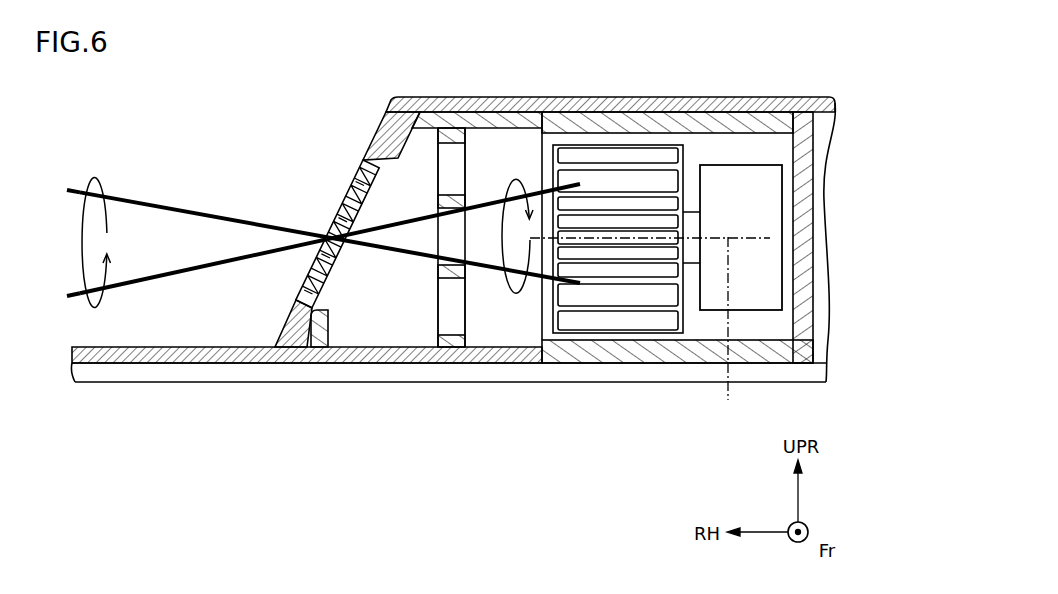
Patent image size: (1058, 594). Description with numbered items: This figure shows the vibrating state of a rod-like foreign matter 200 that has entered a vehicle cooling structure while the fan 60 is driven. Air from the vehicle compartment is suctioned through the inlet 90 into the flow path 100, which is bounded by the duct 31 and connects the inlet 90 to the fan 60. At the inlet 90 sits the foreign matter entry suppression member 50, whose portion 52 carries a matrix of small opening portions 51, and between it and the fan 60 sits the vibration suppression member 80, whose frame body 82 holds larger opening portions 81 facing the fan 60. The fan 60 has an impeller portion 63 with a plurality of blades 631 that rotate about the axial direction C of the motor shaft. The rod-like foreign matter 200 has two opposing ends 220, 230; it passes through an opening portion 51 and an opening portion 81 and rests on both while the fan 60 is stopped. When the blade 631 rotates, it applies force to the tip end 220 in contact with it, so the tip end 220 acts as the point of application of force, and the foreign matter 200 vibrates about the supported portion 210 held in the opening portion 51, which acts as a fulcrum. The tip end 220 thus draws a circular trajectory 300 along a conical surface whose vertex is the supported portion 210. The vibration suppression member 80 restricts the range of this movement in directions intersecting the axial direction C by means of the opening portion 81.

The duct 31 is at (415, 352).
The foreign matter entry suppression member 50 is at (346, 215).
The opening portion 51 is at (332, 228).
The portion 52 is at (330, 232).
The fan 60 is at (826, 123).
The impeller portion 63 is at (668, 324).
The blade 631 is at (623, 321).
The vibration suppression member 80 is at (453, 199).
The opening portion 81 is at (447, 249).
The frame body 82 is at (438, 203).
The inlet 90 is at (296, 274).
The flow path 100 is at (375, 309).
The rod-like foreign matter 200 is at (138, 203).
The supported portion 210 is at (327, 232).
The tip end 220 is at (618, 240).
The end 230 is at (67, 188).
The trajectory 300 is at (93, 178).
The axial direction C is at (650, 333).